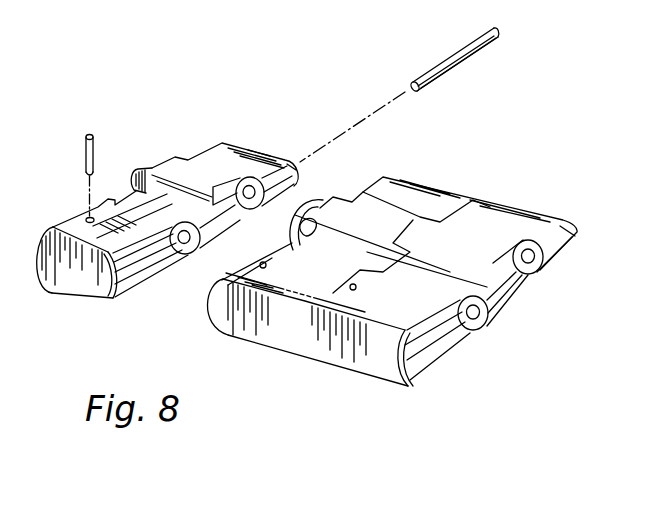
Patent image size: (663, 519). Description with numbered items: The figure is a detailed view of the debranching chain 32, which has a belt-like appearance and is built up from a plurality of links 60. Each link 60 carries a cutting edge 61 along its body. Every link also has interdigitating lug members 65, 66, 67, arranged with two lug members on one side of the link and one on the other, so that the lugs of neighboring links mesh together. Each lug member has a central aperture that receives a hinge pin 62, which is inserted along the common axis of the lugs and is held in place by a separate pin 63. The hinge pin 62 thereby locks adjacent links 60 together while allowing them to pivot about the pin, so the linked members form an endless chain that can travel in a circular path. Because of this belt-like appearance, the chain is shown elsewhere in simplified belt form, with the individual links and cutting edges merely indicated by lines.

The link 60 is at (270, 160).
The cutting edge 61 is at (288, 352).
The hinge pin 62 is at (453, 62).
The pin 63 is at (86, 150).
The lug member 65 is at (217, 232).
The lug member 66 is at (299, 173).
The lug member 67 is at (153, 168).
The debranching chain 32 is at (494, 446).